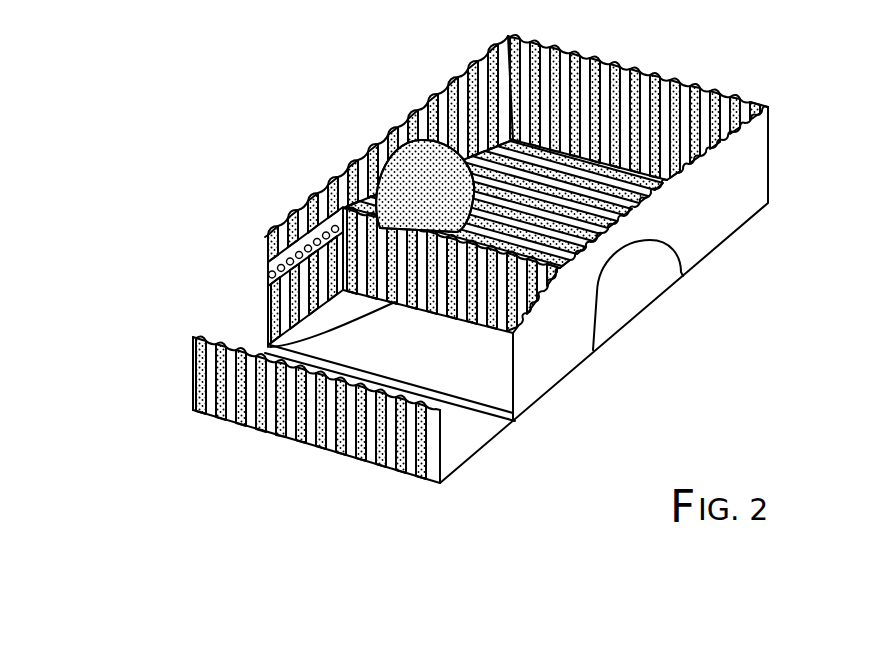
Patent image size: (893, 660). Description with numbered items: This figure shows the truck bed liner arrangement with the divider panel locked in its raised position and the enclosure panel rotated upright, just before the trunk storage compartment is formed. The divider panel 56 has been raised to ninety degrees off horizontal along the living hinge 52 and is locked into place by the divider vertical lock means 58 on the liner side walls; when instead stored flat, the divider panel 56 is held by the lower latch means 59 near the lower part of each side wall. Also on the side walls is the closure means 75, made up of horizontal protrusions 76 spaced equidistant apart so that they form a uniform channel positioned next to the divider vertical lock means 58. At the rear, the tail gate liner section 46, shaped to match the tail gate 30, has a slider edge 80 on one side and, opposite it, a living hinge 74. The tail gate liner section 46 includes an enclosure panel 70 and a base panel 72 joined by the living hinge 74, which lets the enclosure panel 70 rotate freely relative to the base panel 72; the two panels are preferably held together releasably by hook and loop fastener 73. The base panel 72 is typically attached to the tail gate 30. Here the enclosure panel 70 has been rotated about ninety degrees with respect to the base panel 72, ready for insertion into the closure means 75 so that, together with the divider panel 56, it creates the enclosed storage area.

The tail gate 30 is at (313, 450).
The tail gate liner section 46 is at (515, 423).
The living hinge 52 is at (267, 345).
The divider panel 56 is at (380, 230).
The divider vertical lock means 58 is at (352, 207).
The lower latch means 59 is at (270, 330).
The enclosure panel 70 is at (190, 345).
The base panel 72 is at (477, 438).
The hook and loop fastener 73 is at (512, 427).
The living hinge 74 is at (397, 474).
The closure means 75 is at (258, 247).
The horizontal protrusions 76 is at (267, 278).
The slider edge 80 is at (193, 337).